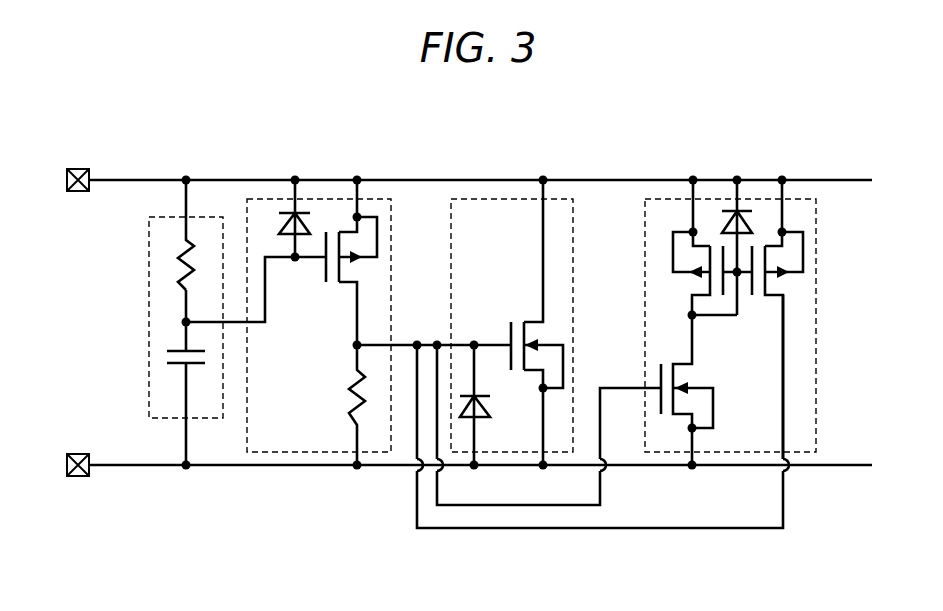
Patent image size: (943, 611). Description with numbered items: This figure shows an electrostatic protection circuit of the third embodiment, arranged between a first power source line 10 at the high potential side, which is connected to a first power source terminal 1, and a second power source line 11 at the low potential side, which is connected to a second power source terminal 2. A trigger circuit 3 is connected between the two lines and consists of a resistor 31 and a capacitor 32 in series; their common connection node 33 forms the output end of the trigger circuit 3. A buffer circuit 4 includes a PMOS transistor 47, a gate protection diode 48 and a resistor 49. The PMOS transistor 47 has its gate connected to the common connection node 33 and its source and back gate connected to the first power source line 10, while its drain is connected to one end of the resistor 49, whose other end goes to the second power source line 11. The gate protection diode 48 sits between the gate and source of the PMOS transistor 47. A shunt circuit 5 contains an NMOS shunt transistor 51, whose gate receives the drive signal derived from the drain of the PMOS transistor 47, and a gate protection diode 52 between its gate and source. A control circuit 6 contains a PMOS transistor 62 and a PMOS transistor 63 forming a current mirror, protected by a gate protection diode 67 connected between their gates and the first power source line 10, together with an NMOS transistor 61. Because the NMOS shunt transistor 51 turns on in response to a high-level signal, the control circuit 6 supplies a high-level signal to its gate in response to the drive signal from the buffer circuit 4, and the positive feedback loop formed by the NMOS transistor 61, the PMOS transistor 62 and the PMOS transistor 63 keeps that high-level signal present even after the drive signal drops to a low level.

The first power source terminal 1 is at (78, 168).
The second power source terminal 2 is at (78, 454).
The trigger circuit 3 is at (148, 236).
The resistor 31 is at (184, 258).
The capacitor 32 is at (167, 357).
The common connection node 33 is at (184, 322).
The buffer circuit 4 is at (375, 197).
The PMOS transistor 47 is at (347, 212).
The gate protection diode 48 is at (283, 207).
The resistor 49 is at (353, 428).
The shunt circuit 5 is at (462, 197).
The NMOS shunt transistor 51 is at (553, 330).
The gate protection diode 52 is at (484, 420).
The control circuit 6 is at (745, 197).
The NMOS transistor 61 is at (707, 443).
The PMOS transistor 62 is at (680, 230).
The PMOS transistor 63 is at (798, 210).
The gate protection diode 67 is at (720, 210).
The first power source line 10 is at (512, 178).
The second power source line 11 is at (245, 468).